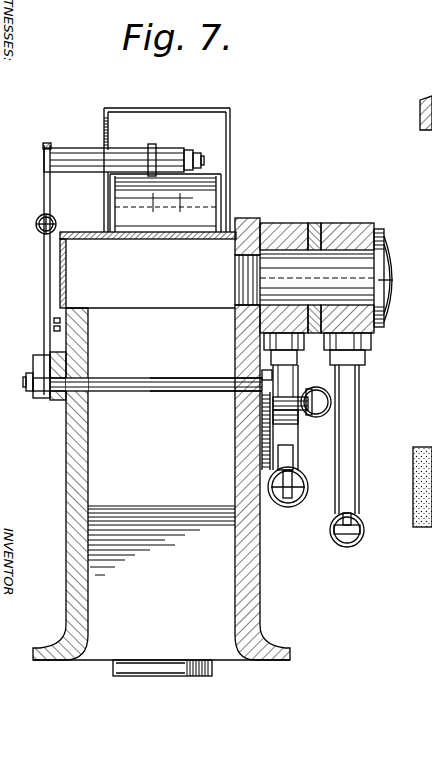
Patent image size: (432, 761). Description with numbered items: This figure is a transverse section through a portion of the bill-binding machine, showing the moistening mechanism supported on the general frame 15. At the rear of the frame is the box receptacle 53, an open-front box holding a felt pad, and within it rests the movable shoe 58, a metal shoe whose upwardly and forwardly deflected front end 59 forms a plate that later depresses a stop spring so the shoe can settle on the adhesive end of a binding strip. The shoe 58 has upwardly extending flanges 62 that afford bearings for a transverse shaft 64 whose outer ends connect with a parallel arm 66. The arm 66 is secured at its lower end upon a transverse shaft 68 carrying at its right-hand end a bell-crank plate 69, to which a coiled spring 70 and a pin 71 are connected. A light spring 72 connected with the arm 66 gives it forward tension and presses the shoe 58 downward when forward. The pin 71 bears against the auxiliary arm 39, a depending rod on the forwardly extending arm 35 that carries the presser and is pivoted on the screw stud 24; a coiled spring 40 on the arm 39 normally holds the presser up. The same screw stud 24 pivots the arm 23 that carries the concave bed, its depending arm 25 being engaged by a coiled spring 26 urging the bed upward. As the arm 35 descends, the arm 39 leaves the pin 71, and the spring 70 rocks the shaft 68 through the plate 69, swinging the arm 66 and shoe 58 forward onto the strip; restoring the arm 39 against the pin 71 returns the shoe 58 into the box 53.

The general frame 15 is at (261, 604).
The arm 23 is at (359, 226).
The screw stud 24 is at (386, 305).
The depending arm 25 is at (358, 447).
The coiled spring 26 is at (343, 540).
The arm 35 is at (292, 212).
The auxiliary arm 39 is at (288, 445).
The coiled spring 40 is at (288, 507).
The box receptacle 53 is at (228, 148).
The movable shoe 58 is at (165, 218).
The deflected front end 59 is at (222, 174).
The flanges 62 is at (155, 152).
The transverse shaft 64 is at (88, 140).
The arm 66 is at (44, 188).
The transverse shaft 68 is at (150, 388).
The bell-crank plate 69 is at (262, 385).
The coiled spring 70 is at (322, 395).
The pin 71 is at (300, 412).
The light spring 72 is at (34, 224).